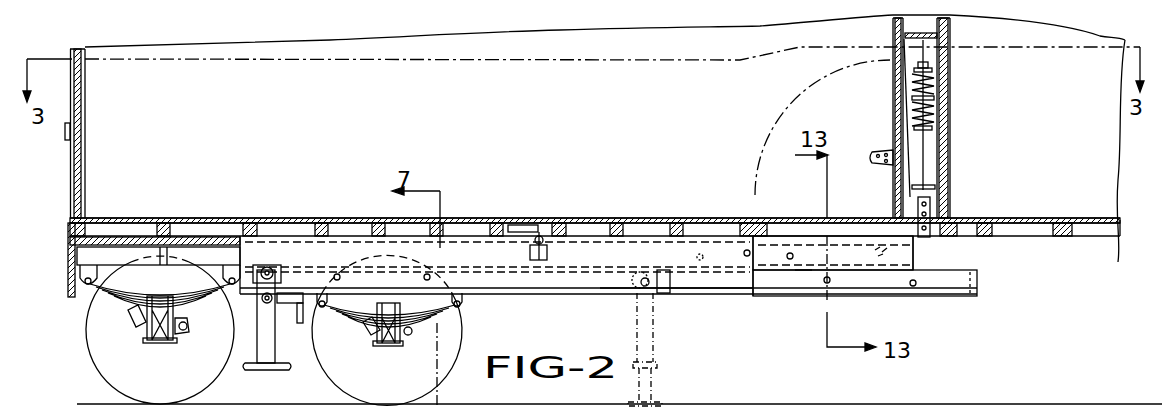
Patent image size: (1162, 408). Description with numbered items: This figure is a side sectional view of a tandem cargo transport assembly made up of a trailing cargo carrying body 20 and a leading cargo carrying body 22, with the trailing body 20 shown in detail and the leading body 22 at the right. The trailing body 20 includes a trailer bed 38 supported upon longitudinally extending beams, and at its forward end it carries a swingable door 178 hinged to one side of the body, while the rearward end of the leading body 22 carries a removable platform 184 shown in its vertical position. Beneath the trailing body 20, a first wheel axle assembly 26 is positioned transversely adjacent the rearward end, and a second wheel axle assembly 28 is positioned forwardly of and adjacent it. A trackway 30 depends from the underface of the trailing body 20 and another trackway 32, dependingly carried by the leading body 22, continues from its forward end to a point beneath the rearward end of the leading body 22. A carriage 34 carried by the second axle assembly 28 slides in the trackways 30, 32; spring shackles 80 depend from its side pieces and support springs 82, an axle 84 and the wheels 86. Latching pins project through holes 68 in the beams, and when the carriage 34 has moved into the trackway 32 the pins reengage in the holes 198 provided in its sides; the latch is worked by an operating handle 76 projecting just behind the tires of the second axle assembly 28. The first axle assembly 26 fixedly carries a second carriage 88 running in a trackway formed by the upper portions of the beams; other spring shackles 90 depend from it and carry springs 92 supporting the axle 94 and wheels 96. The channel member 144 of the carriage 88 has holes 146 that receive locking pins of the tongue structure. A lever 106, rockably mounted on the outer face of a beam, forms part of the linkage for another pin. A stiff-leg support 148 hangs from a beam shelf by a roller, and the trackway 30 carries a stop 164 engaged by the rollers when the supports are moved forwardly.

The trailing cargo carrying body 20 is at (66, 201).
The leading cargo carrying body 22 is at (1128, 213).
The first wheel axle assembly 26 is at (81, 345).
The second wheel axle assembly 28 is at (323, 371).
The trackway 30 is at (727, 298).
The trackway 32 is at (951, 299).
The carriage 34 is at (498, 293).
The trailer bed 38 is at (657, 216).
The holes 68 is at (339, 274).
The operating handle 76 is at (302, 323).
The spring shackles 80 is at (484, 292).
The springs 82 is at (410, 328).
The axle 84 is at (386, 345).
The wheels 86 is at (452, 367).
The carriage 88 is at (214, 238).
The spring shackles 90 is at (88, 290).
The springs 92 is at (188, 305).
The axle 94 is at (160, 344).
The wheels 96 is at (200, 376).
The lever 106 is at (553, 222).
The channel member 144 is at (852, 250).
The holes 146 is at (791, 253).
The support 148 is at (263, 371).
The stop 164 is at (671, 291).
The swingable door 178 is at (893, 100).
The removable platform 184 is at (949, 128).
The holes 198 is at (913, 287).